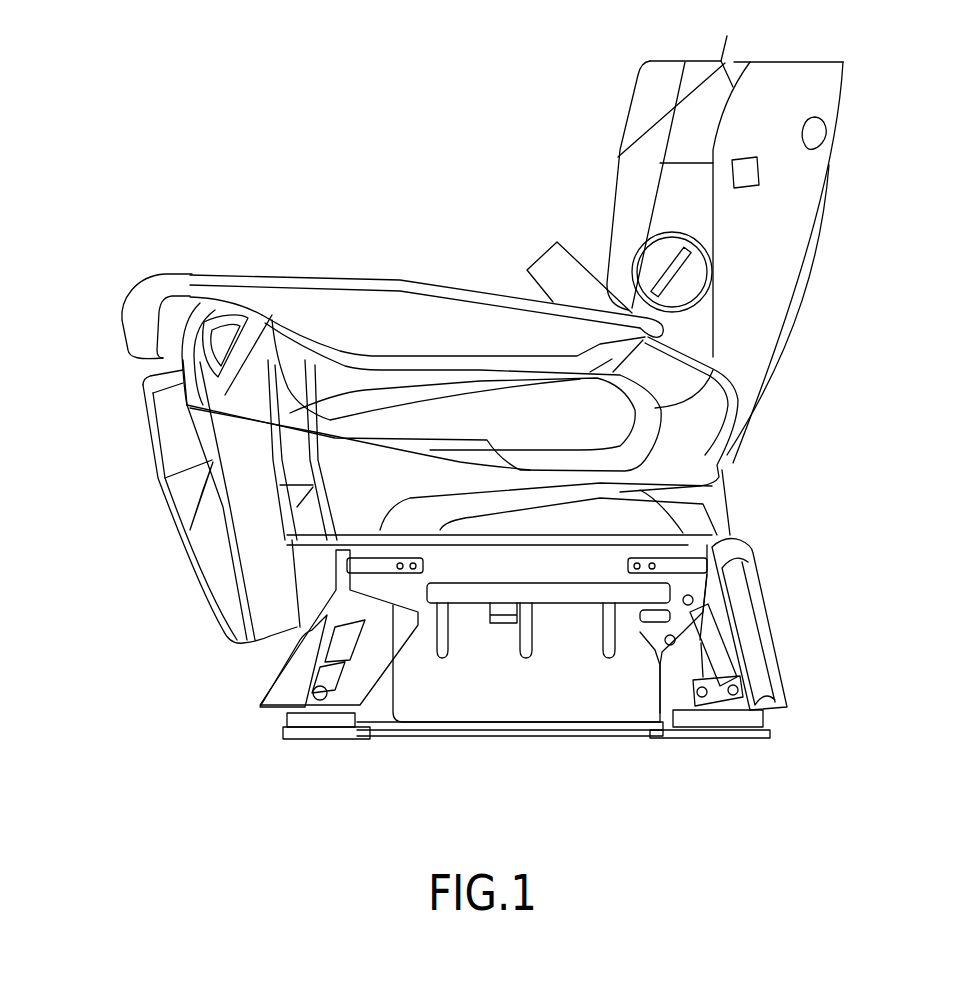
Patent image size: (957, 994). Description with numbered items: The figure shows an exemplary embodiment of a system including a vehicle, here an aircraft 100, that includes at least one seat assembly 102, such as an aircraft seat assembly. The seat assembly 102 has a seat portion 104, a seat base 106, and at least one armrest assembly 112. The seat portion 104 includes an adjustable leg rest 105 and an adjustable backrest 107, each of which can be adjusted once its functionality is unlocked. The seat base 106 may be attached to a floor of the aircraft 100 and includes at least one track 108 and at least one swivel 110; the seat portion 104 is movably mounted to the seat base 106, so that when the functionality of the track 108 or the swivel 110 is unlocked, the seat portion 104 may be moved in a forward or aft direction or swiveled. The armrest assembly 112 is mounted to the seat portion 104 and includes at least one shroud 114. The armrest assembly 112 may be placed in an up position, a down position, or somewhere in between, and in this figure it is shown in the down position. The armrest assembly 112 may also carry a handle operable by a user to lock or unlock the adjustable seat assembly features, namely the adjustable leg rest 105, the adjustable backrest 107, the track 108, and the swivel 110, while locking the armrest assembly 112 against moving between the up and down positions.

The aircraft 100 is at (246, 97).
The seat assembly 102 is at (362, 197).
The seat portion 104 is at (790, 247).
The adjustable leg rest 105 is at (192, 537).
The seat base 106 is at (762, 628).
The adjustable backrest 107 is at (825, 88).
The track 108 is at (477, 567).
The swivel 110 is at (490, 622).
The armrest assembly 112 is at (352, 302).
The shroud 114 is at (488, 325).